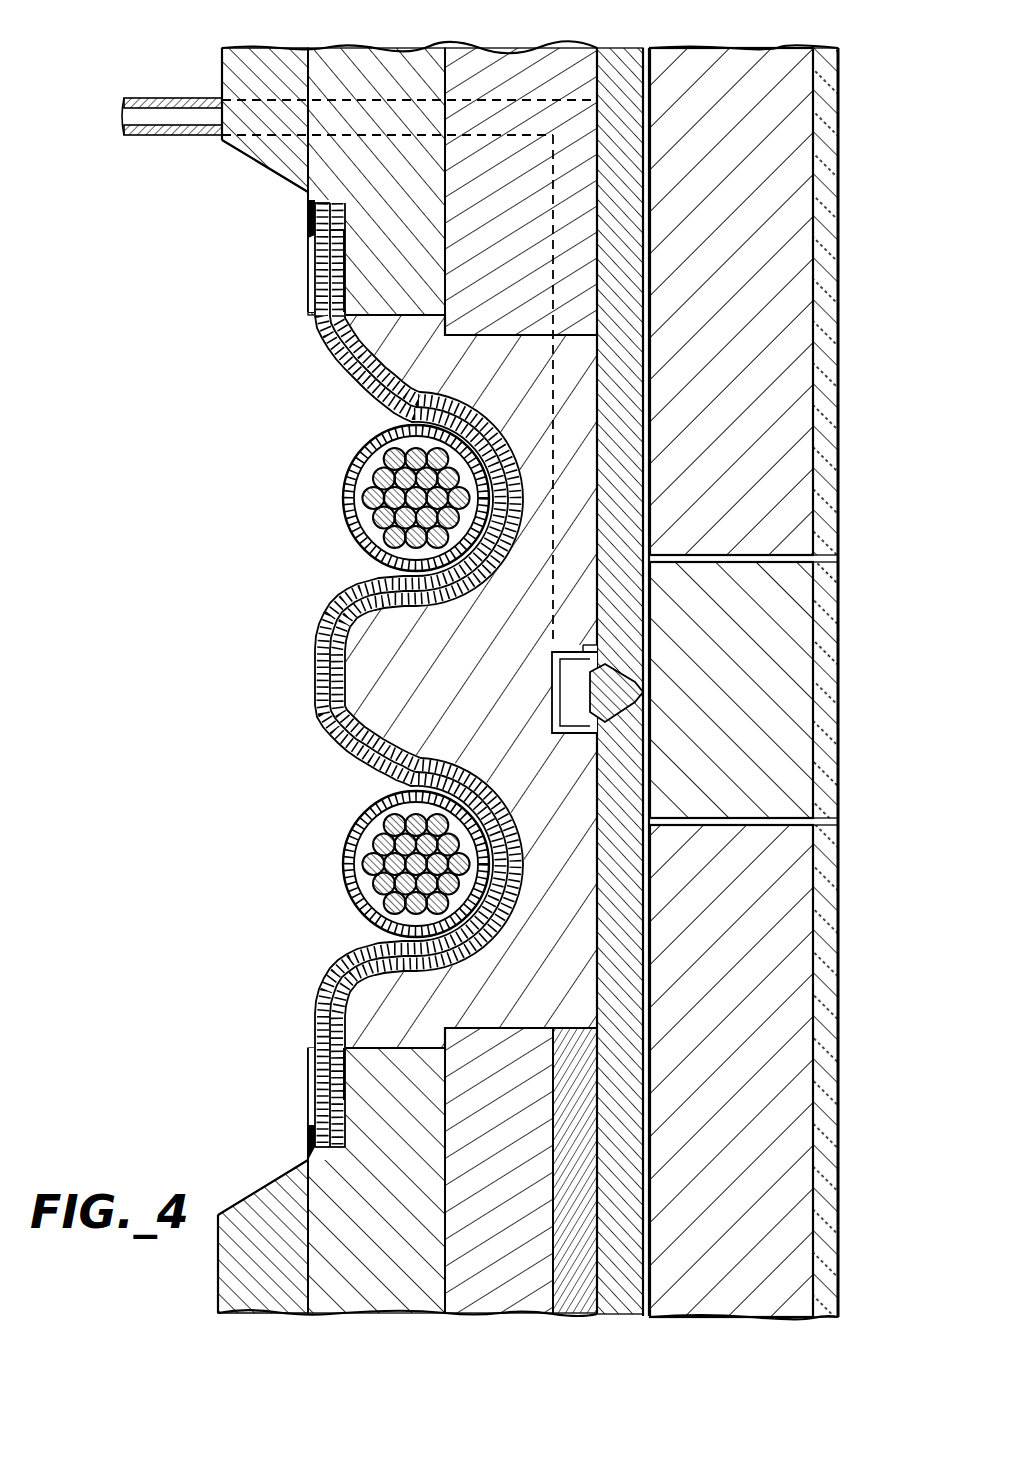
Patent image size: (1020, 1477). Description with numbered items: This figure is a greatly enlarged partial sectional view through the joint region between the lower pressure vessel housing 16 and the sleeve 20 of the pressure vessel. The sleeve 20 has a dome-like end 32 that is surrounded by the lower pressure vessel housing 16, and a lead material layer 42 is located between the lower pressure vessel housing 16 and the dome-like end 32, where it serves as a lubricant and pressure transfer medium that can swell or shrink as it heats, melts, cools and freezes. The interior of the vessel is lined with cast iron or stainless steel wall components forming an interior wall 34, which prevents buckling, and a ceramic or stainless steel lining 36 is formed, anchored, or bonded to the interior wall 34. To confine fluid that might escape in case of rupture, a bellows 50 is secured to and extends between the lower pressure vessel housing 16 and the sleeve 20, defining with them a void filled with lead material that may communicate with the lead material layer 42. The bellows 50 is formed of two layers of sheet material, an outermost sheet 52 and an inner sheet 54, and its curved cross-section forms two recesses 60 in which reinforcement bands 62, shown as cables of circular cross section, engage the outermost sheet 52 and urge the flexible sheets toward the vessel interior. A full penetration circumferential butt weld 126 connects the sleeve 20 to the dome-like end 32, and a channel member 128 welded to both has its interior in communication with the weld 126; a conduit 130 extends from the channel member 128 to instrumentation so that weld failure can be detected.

The lower pressure vessel housing 16 is at (362, 1313).
The sleeve 20 is at (303, 152).
The dome-like end 32 is at (617, 47).
The interior wall 34 is at (732, 47).
The lining 36 is at (830, 912).
The lead material layer 42 is at (580, 1313).
The bellows 50 is at (371, 676).
The outermost sheet 52 is at (343, 392).
The sheet 54 is at (343, 752).
The recesses 60 is at (365, 590).
The reinforcement bands 62 is at (352, 495).
The full penetration circumferential butt weld 126 is at (640, 680).
The channel member 128 is at (598, 650).
The conduit 130 is at (183, 97).